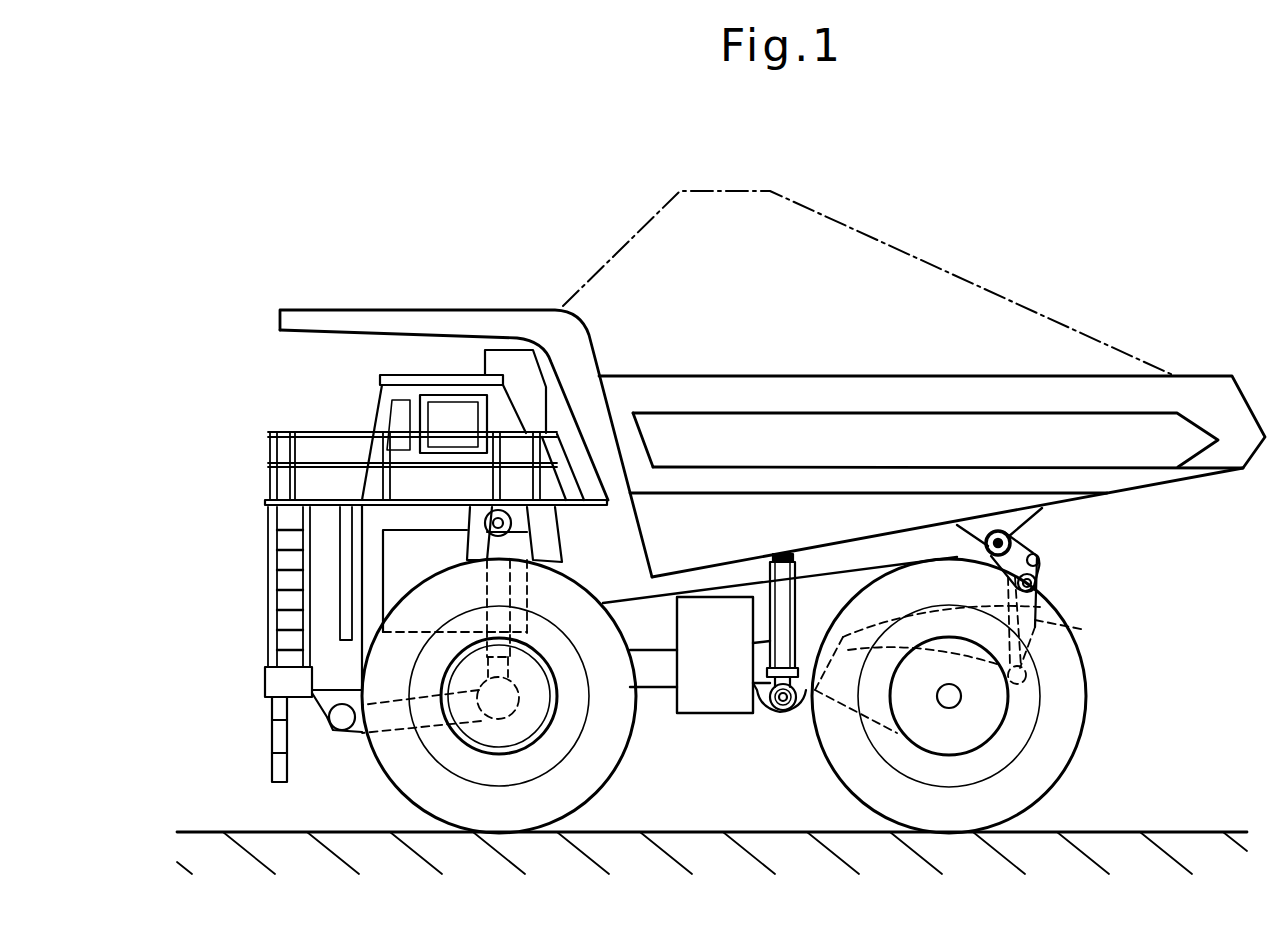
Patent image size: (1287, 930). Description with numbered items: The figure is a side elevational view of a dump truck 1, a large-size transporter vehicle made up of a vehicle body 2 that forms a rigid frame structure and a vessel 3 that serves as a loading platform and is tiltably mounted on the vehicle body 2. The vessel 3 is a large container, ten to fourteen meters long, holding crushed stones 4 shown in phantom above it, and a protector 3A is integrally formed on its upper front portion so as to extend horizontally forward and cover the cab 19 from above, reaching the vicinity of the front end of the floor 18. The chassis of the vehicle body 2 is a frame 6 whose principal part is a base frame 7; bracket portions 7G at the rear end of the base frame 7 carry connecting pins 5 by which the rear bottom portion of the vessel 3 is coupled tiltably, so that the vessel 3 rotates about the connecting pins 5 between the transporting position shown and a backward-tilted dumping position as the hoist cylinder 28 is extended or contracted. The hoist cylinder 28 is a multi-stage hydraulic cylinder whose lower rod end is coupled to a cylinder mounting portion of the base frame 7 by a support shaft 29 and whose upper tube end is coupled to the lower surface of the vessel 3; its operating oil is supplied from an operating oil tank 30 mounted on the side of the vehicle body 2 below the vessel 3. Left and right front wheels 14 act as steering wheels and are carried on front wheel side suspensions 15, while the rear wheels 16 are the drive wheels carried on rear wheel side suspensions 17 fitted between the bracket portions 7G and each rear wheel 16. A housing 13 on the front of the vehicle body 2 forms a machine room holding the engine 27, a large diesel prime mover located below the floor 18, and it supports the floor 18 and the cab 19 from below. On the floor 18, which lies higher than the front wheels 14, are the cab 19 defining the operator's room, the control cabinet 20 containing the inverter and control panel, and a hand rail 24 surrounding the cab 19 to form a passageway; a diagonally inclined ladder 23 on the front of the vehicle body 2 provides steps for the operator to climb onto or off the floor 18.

The dump truck 1 is at (538, 296).
The vehicle body 2 is at (558, 563).
The vessel 3 is at (976, 387).
The protector 3A is at (375, 318).
The crushed stones 4 is at (782, 193).
The connecting pins 5 is at (1010, 541).
The frame 6 is at (258, 691).
The base frame 7 is at (659, 650).
The bracket portions 7G is at (1040, 565).
The housing 13 is at (335, 528).
The front wheels 14 is at (395, 765).
The front wheel side suspensions 15 is at (505, 543).
The rear wheels 16 is at (1053, 753).
The rear wheel side suspensions 17 is at (1087, 630).
The floor 18 is at (322, 500).
The cab 19 is at (405, 398).
The control cabinet 20 is at (507, 360).
The ladder 23 is at (287, 591).
The hand rail 24 is at (320, 432).
The engine 27 is at (393, 575).
The hoist cylinders 28 is at (808, 695).
The support shaft 29 is at (779, 708).
The operating oil tank 30 is at (713, 702).